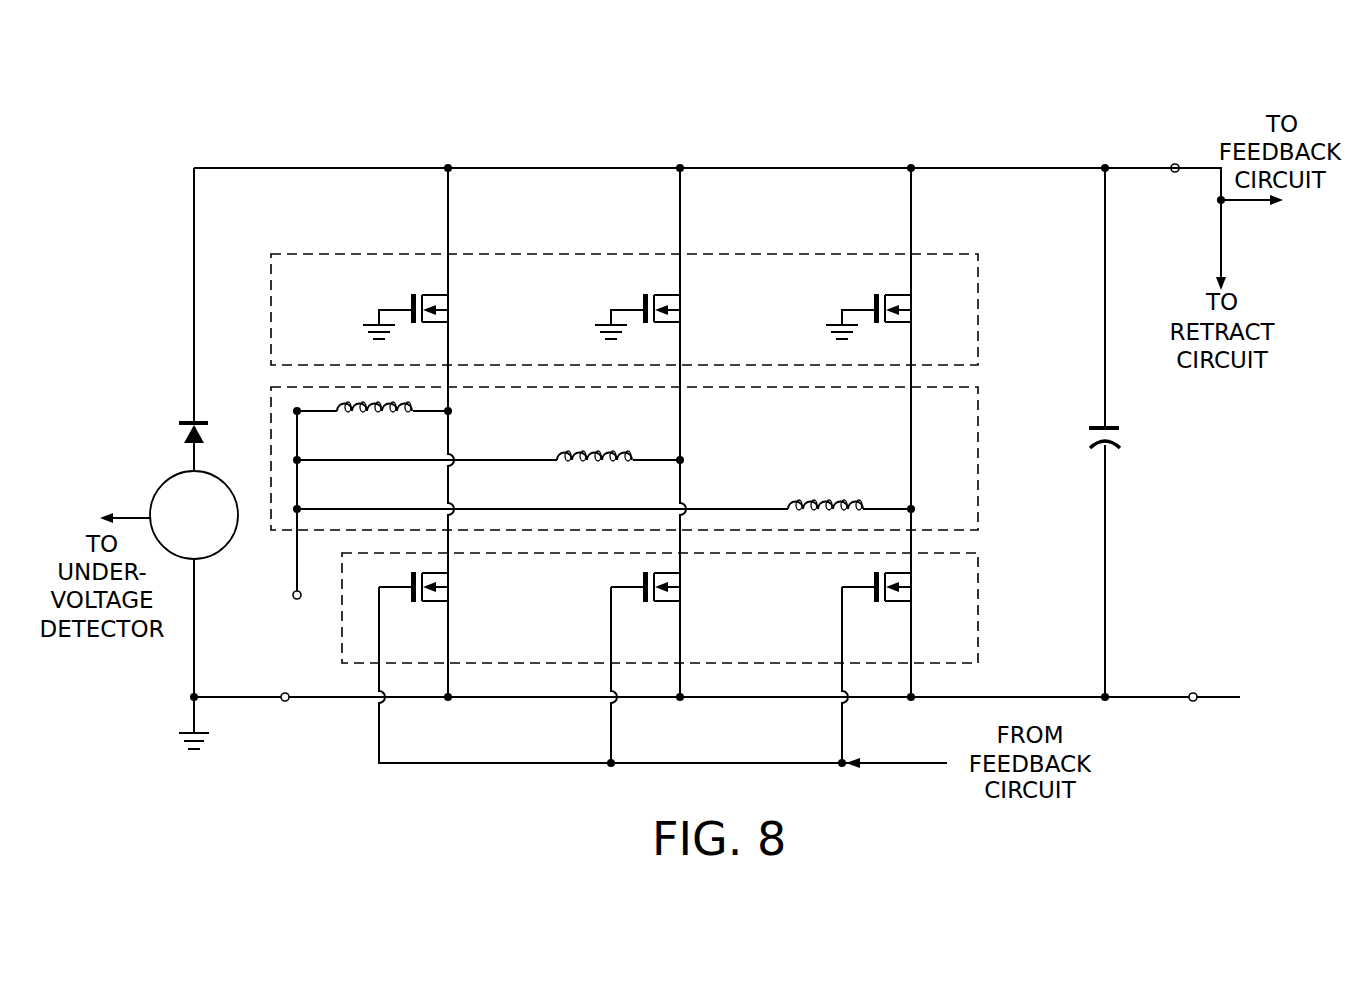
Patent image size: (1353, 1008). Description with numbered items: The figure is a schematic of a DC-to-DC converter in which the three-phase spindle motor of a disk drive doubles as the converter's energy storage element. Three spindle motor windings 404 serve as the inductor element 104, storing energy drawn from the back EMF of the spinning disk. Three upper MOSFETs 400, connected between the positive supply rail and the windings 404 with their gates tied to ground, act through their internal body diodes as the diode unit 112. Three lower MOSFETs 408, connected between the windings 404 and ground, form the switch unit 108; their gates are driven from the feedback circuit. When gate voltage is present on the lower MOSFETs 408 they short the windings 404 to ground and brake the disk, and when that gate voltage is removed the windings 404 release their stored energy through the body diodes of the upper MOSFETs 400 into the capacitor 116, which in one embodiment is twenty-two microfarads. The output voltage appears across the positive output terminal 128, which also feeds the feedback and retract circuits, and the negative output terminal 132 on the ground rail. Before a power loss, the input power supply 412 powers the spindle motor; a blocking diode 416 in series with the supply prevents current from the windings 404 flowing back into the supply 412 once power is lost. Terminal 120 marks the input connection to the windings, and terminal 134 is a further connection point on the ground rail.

The upper MOSFETs 400 is at (411, 295).
The spindle motor windings 404 is at (377, 416).
The lower MOSFETs 408 is at (440, 602).
The input power supply 412 is at (178, 478).
The blocking diode 416 is at (185, 421).
The diode unit 112 is at (960, 254).
The inductor element 104 is at (968, 387).
The switch unit 108 is at (968, 553).
The capacitor 116 is at (1098, 424).
The positive input terminal 120 is at (292, 596).
The positive output terminal 128 is at (1175, 163).
The negative output terminal 132 is at (1193, 692).
The ground terminal 134 is at (282, 692).